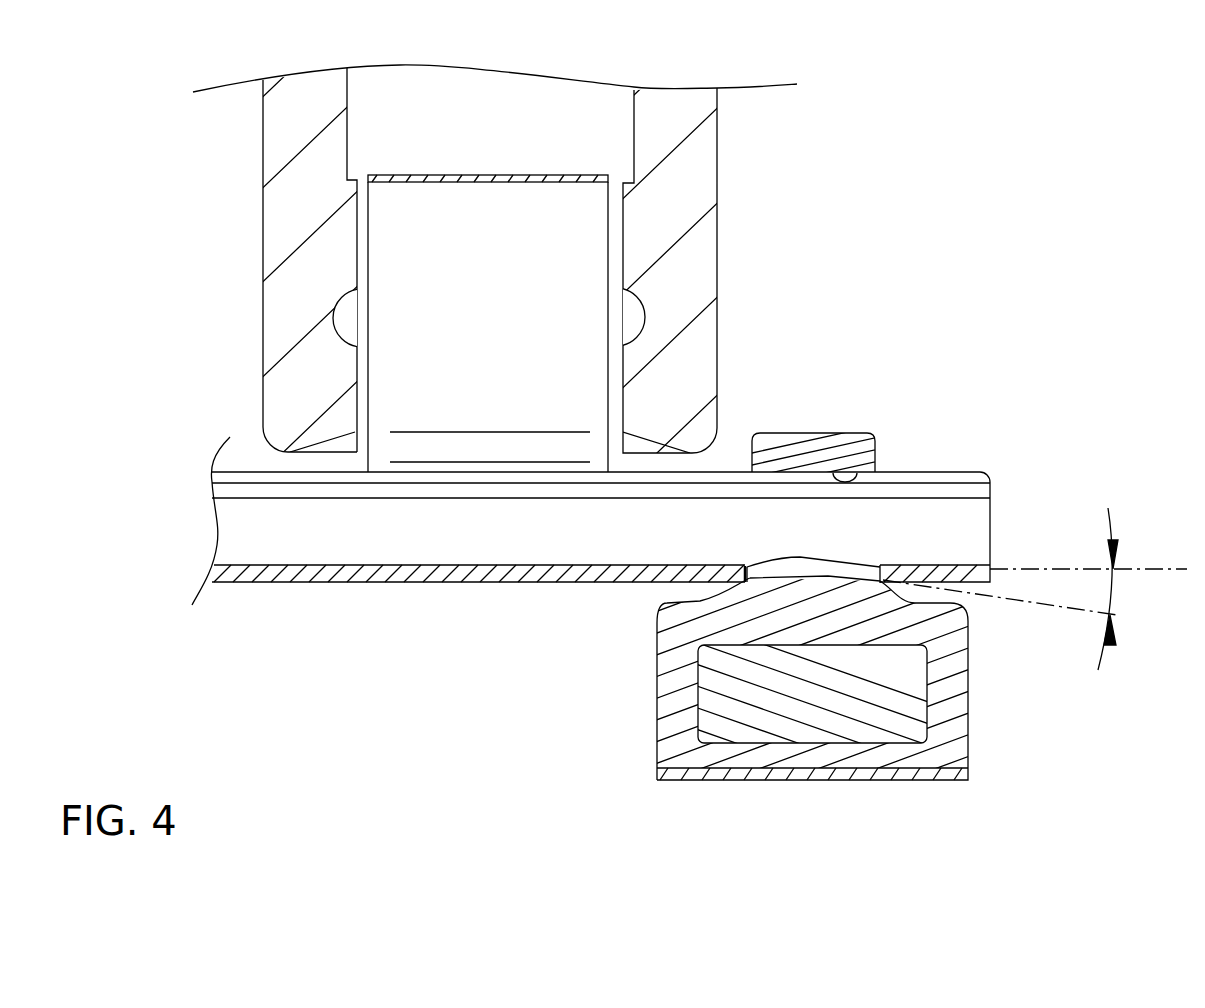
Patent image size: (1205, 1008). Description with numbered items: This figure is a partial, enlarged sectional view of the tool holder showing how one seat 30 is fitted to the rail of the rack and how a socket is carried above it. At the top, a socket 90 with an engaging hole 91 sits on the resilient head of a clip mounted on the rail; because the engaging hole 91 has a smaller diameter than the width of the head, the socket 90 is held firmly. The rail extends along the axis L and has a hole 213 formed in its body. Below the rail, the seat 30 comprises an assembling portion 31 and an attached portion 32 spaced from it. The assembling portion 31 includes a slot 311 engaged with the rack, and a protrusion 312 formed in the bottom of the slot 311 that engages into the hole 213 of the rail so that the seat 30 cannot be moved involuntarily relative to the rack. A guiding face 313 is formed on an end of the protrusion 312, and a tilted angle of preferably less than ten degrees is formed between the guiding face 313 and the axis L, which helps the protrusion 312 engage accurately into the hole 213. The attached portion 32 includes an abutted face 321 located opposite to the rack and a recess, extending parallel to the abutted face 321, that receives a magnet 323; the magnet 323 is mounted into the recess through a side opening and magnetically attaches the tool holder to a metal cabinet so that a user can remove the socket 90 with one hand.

The socket 90 is at (690, 172).
The engaging hole 91 is at (611, 258).
The hole 213 is at (853, 570).
The seat 30 is at (944, 813).
The assembling portion 31 is at (807, 400).
The slot 311 is at (849, 480).
The protrusion 312 is at (745, 581).
The guiding face 313 is at (830, 572).
The attached portion 32 is at (1000, 726).
The abutted face 321 is at (858, 782).
The magnet 323 is at (770, 712).
The axis L is at (1178, 566).